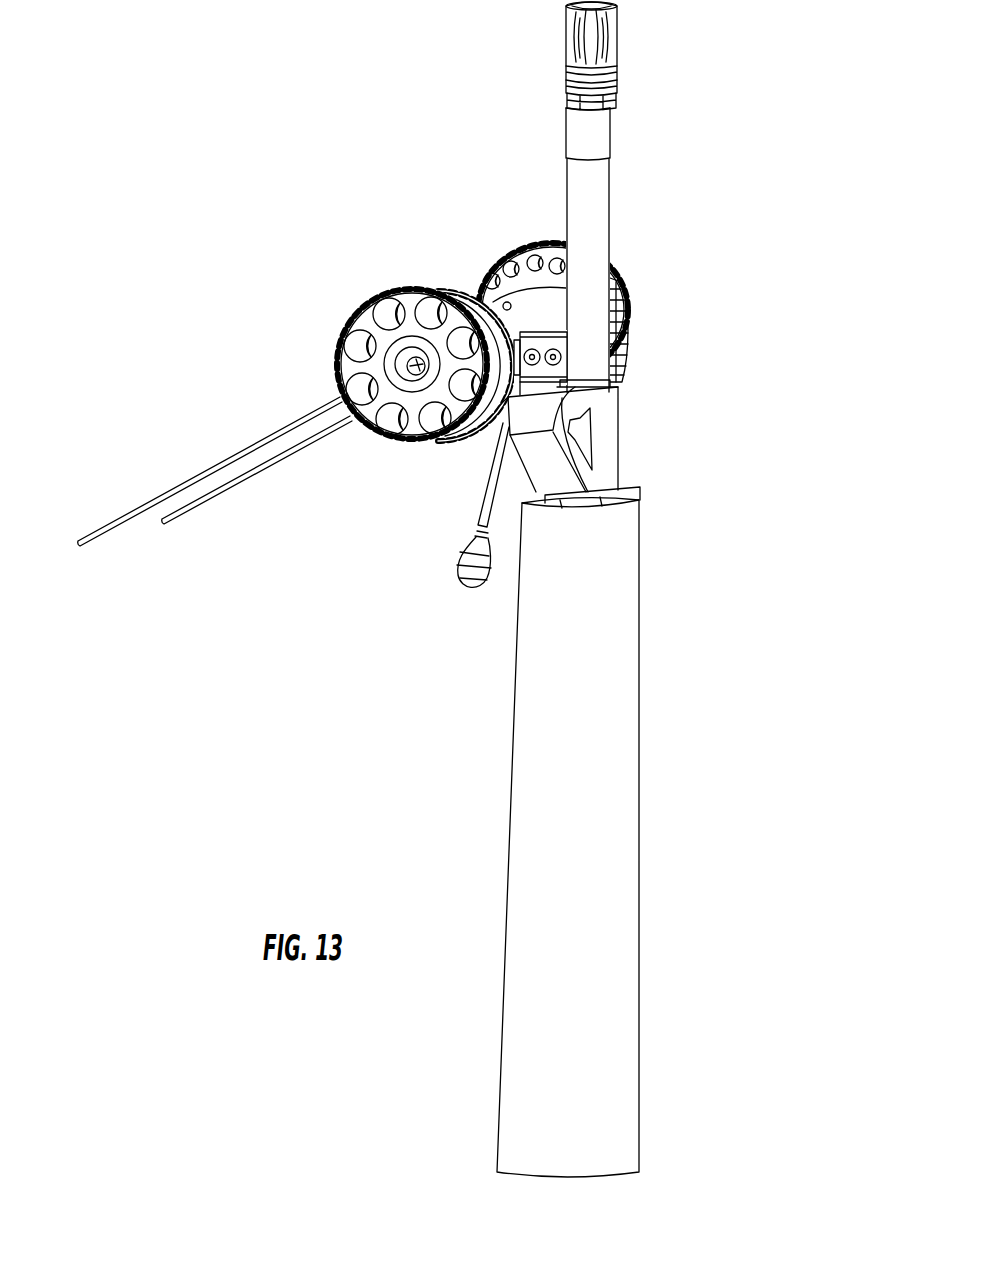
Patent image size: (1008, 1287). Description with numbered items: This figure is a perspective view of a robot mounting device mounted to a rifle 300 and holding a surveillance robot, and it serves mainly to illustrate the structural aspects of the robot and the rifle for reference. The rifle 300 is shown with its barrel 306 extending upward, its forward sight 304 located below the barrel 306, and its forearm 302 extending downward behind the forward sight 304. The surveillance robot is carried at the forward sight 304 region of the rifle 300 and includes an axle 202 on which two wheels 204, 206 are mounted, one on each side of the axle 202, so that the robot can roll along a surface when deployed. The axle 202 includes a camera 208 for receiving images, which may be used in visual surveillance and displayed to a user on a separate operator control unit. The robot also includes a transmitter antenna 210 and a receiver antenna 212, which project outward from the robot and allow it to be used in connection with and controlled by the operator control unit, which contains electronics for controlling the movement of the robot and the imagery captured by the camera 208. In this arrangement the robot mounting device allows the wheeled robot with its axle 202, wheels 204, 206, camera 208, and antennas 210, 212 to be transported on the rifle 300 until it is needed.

The rifle 300 is at (682, 106).
The forearm 302 is at (638, 903).
The forward sight 304 is at (508, 421).
The barrel 306 is at (607, 225).
The axle 202 is at (524, 312).
The wheel 204 is at (380, 287).
The wheel 206 is at (627, 323).
The camera 208 is at (503, 303).
The transmitter antenna 210 is at (100, 540).
The receiver antenna 212 is at (235, 487).